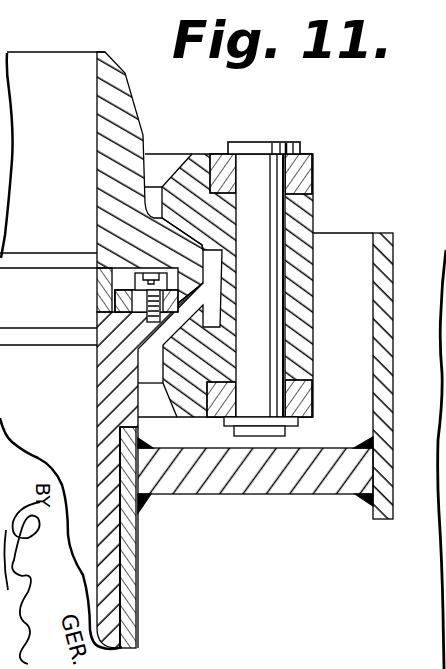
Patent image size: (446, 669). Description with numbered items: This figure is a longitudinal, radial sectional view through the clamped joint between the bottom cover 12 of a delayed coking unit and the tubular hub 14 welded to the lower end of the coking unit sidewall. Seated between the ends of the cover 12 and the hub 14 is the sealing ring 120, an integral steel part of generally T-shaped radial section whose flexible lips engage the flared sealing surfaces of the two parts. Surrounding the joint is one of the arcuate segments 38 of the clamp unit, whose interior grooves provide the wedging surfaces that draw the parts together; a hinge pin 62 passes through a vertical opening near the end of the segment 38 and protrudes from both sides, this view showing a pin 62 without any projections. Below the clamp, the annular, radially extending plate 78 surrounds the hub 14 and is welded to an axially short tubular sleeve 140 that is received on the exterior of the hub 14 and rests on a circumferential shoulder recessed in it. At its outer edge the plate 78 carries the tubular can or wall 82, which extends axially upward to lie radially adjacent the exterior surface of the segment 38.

The bottom cover 12 is at (110, 186).
The sealing ring 120 is at (58, 318).
The tubular hub 14 is at (97, 413).
The tubular sleeve 140 is at (138, 610).
The arcuate segment 38 is at (302, 324).
The hinge pin 62 is at (273, 221).
The tubular can or wall 82 is at (388, 385).
The annular plate 78 is at (262, 497).